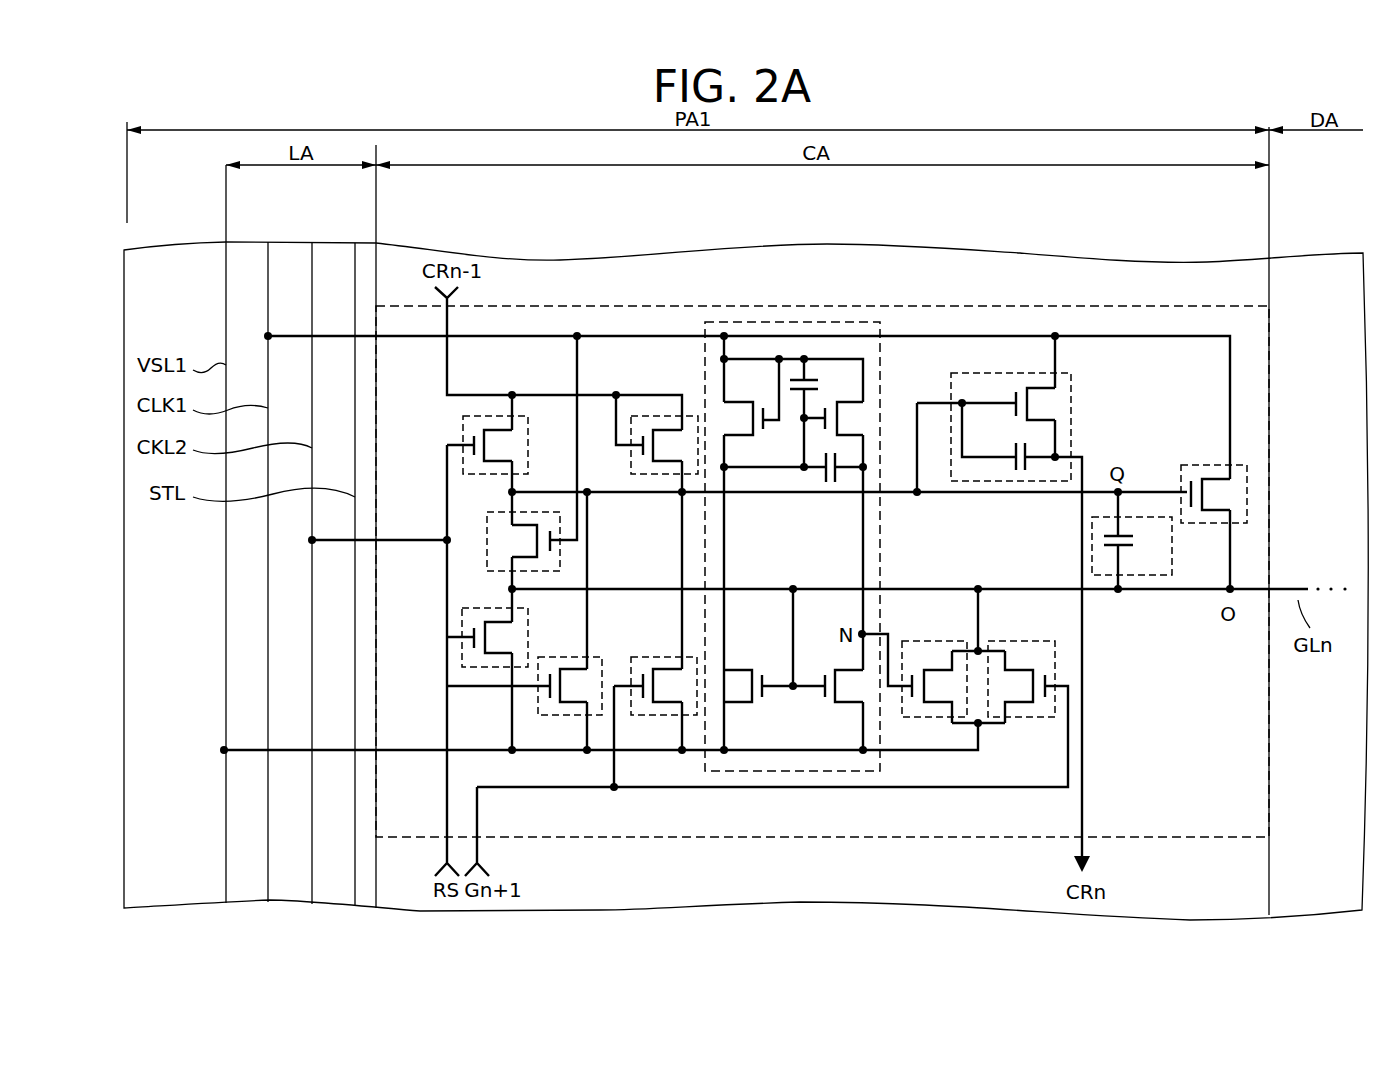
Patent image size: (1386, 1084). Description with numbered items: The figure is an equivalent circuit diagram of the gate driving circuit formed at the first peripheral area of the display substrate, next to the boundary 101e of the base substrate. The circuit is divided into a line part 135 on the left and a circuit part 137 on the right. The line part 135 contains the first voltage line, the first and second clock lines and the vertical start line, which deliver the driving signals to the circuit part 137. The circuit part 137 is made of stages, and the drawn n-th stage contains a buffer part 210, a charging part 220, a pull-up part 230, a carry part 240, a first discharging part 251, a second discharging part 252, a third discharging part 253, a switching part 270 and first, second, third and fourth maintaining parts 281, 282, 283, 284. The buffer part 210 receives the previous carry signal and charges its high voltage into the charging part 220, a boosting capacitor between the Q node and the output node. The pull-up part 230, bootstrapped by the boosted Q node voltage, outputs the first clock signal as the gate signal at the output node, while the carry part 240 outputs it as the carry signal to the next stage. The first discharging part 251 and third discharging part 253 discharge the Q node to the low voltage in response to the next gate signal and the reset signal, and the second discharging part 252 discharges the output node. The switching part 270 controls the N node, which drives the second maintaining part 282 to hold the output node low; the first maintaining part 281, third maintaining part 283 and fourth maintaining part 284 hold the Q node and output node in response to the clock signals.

The boundary 101e is at (125, 568).
The line part 135 is at (376, 212).
The circuit part 137 is at (376, 212).
The buffer part 210 is at (652, 416).
The charging part 220 is at (1150, 577).
The pull-up part 230 is at (1195, 465).
The carry part 240 is at (1071, 386).
The first discharging part 251 is at (660, 715).
The second discharging part 252 is at (1020, 717).
The third discharging part 253 is at (560, 715).
The switching part 270 is at (780, 320).
The first maintaining part 281 is at (487, 560).
The second maintaining part 282 is at (920, 717).
The third maintaining part 283 is at (463, 428).
The fourth maintaining part 284 is at (462, 650).